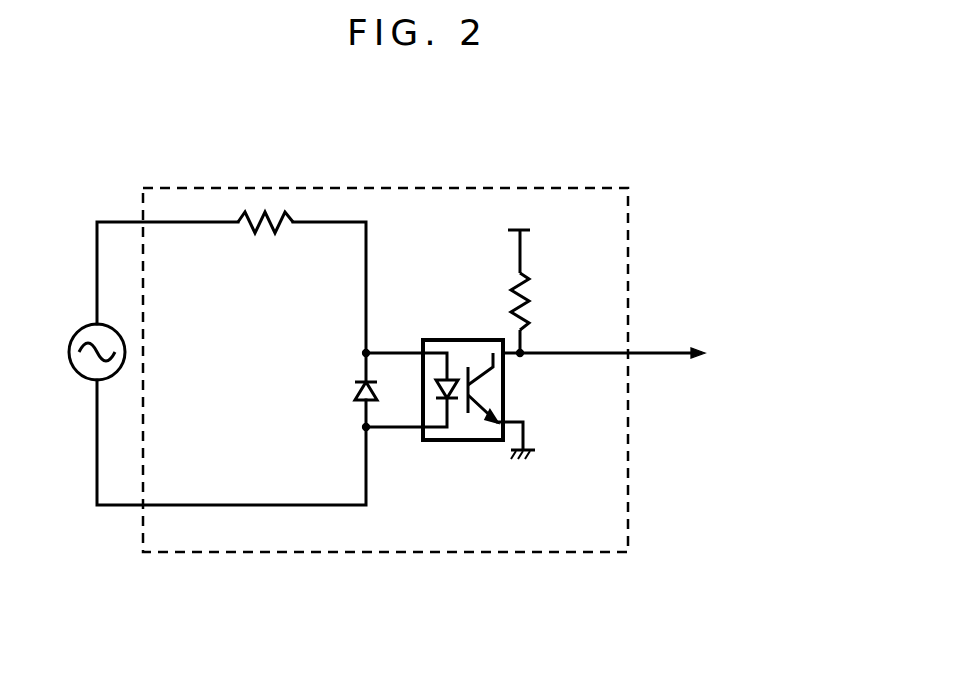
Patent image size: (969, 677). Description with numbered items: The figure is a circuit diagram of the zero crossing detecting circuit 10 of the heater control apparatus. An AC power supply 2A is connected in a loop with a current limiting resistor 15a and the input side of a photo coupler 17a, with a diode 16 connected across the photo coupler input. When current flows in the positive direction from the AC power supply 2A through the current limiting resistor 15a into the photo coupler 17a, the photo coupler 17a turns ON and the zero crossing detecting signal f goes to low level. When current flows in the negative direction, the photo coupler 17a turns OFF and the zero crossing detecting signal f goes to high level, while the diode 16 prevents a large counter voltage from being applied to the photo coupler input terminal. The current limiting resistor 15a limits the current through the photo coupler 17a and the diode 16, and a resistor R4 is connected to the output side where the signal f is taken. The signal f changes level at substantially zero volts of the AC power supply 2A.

The zero crossing detecting circuit 10 is at (560, 188).
The AC power supply 2A is at (78, 331).
The current limiting resistor 15a is at (248, 217).
The diode 16 is at (356, 392).
The photo coupler 17a is at (478, 340).
The resistor R4 is at (540, 293).
The zero crossing detecting signal f is at (645, 353).